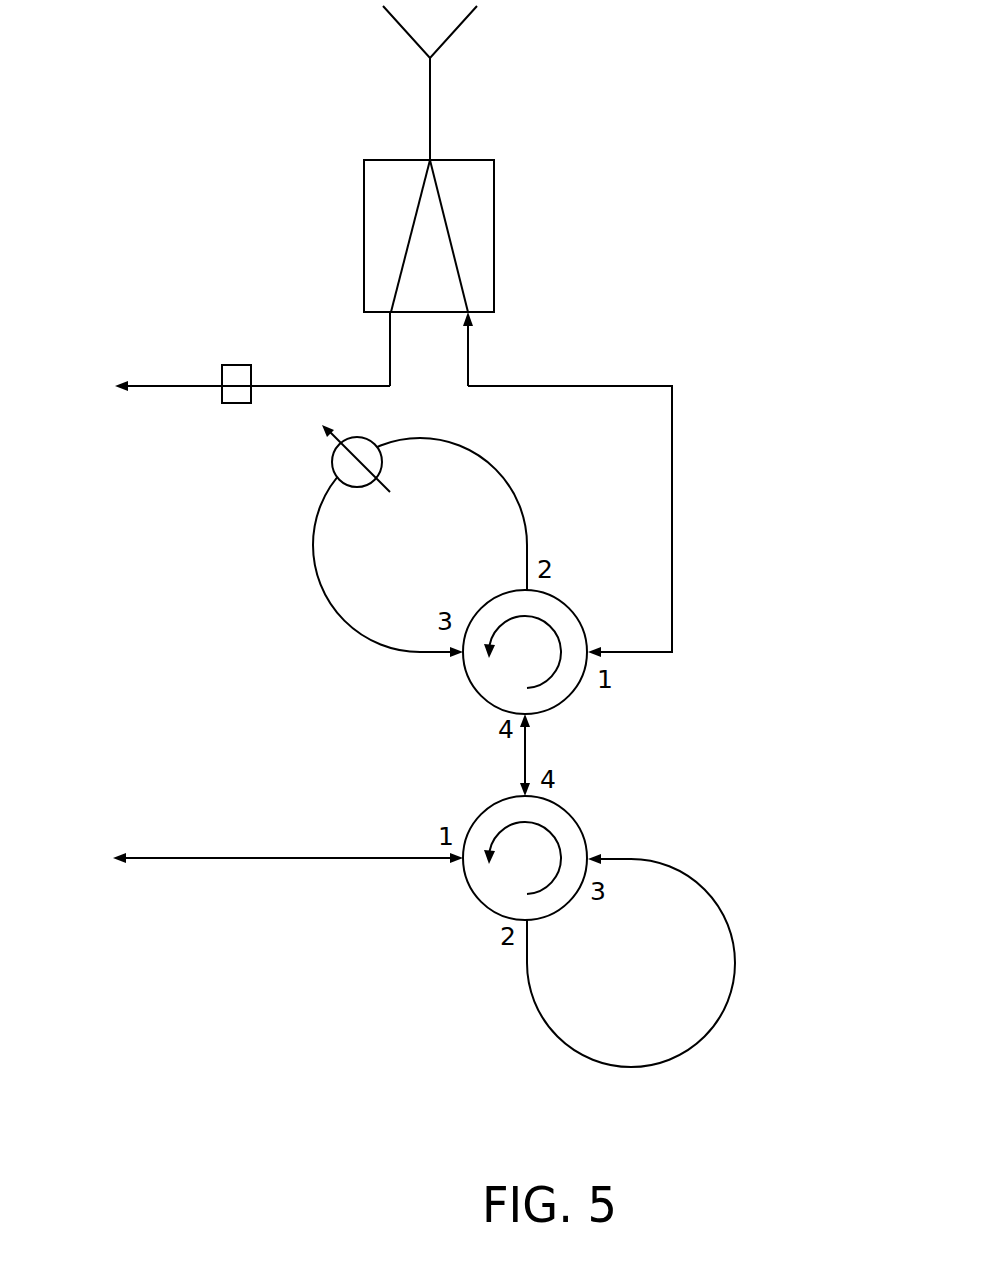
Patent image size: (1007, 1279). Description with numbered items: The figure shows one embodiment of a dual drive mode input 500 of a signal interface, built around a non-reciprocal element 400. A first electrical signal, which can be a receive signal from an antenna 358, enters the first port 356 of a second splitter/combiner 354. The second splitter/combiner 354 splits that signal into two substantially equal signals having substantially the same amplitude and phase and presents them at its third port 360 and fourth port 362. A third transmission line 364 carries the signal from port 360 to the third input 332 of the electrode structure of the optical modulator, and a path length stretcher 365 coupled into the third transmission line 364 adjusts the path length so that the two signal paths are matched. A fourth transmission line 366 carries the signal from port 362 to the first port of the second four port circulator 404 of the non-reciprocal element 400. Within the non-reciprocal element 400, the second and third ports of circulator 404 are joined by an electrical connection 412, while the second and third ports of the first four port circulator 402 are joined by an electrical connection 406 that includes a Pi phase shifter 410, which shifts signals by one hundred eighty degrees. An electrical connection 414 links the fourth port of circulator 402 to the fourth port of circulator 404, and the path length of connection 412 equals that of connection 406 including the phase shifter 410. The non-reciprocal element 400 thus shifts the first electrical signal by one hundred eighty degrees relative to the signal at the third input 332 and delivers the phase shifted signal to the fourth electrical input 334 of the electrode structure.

The antenna 358 is at (462, 25).
The first port 356 is at (432, 158).
The second splitter/combiner 354 is at (494, 255).
The third port 360 is at (388, 318).
The fourth port 362 is at (472, 318).
The third transmission line 364 is at (195, 383).
The path length stretcher 365 is at (235, 403).
The third input 332 is at (110, 386).
The fourth electrical input 334 is at (110, 859).
The fourth transmission line 366 is at (673, 512).
The second four port circulator 404 is at (577, 613).
The electrical connection 412 is at (438, 437).
The Pi phase shifter 410 is at (385, 458).
The electrical connection 414 is at (527, 750).
The first four port circulator 402 is at (570, 815).
The electrical connection 406 is at (725, 915).
The dual drive mode input 500 is at (820, 130).
The non-reciprocal element 400 is at (810, 745).